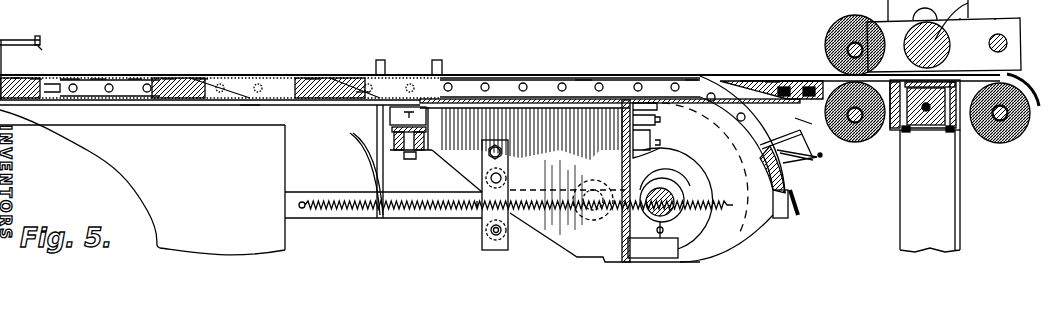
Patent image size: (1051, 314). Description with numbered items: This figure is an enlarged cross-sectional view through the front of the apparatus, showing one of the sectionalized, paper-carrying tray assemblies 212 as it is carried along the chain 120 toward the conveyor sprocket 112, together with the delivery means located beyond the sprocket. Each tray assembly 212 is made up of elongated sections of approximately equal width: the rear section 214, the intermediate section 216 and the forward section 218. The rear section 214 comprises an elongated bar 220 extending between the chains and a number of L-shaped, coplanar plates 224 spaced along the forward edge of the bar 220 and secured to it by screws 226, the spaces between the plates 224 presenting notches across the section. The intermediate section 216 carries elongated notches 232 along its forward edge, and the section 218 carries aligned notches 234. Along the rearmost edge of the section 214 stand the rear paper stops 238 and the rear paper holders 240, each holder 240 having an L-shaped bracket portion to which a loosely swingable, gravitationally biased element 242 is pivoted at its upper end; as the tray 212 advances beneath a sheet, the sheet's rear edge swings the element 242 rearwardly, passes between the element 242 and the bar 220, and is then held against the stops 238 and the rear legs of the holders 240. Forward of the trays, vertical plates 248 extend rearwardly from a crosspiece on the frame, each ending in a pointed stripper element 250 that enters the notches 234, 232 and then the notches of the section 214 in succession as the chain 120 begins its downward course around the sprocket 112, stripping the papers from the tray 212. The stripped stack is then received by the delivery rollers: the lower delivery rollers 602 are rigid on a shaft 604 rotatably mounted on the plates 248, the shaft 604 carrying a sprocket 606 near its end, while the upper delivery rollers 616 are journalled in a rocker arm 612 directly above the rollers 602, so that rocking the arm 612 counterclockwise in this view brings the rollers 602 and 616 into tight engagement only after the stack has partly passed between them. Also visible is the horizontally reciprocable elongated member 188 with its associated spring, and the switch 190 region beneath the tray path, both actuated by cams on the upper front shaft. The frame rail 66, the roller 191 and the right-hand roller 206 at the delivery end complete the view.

The rear paper holder 240 is at (2, 40).
The rear paper stop 238 is at (12, 78).
The gravitationally biased element 242 is at (40, 50).
The tray assembly 212 is at (70, 78).
The elongated bar 220 is at (40, 78).
The rear section 214 is at (96, 78).
The L-shaped plate 224 is at (134, 78).
The intermediate section 216 is at (168, 78).
The elongated notch 232 is at (200, 79).
The frame rail 66 is at (248, 113).
The front section 218 is at (312, 78).
The notch 234 is at (362, 92).
The chain 120 is at (583, 80).
The conveyor sprocket 112 is at (692, 103).
The stripper element 250 is at (772, 81).
The upper delivery roller 616 is at (840, 32).
The lower delivery roller 602 is at (822, 150).
The shaft 604 is at (895, 132).
The right roller 206 is at (942, 82).
The rocker arm 612 is at (1000, 22).
The sprocket 606 is at (981, 10).
The vertical plate 248 is at (800, 118).
The screw 226 is at (50, 88).
The horizontally reciprocable elongated member 188 is at (362, 213).
The roller 191 is at (687, 212).
The electrical switch 190 is at (633, 247).